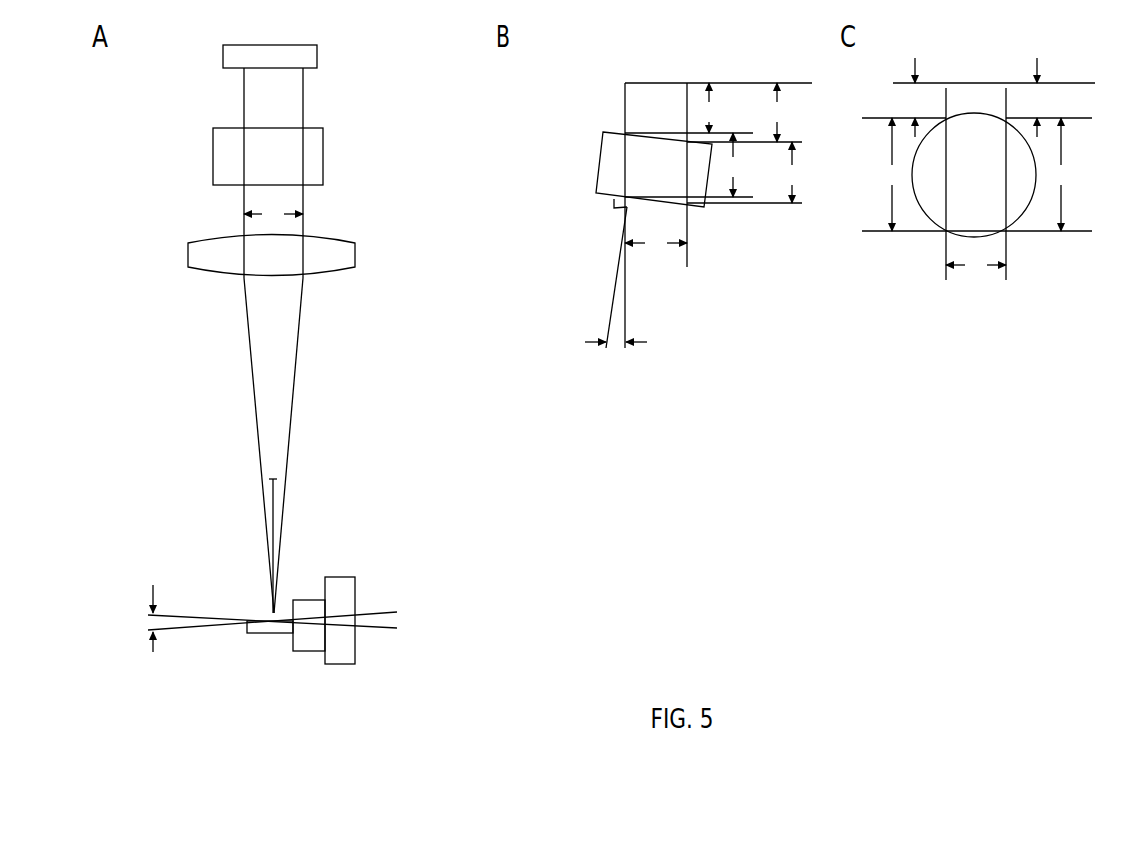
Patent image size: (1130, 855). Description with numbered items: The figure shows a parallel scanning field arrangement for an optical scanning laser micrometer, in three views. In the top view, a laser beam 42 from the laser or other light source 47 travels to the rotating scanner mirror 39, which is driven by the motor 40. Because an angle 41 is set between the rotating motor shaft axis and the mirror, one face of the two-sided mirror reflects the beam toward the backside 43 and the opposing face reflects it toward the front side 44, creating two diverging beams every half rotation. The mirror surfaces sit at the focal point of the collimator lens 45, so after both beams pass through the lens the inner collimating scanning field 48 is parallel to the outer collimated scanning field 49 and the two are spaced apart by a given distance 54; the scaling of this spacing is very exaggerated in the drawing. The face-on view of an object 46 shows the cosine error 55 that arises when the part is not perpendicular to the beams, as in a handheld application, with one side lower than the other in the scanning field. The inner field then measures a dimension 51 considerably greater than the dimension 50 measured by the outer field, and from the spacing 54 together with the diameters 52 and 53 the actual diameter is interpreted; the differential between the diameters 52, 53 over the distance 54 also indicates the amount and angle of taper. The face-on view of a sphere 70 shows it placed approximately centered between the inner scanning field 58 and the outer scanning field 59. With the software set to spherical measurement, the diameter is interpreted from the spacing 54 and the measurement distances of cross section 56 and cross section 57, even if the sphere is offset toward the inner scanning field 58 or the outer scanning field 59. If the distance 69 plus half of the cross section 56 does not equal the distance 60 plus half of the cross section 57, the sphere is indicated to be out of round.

The scanner mirror 39 is at (270, 637).
The motor 40 is at (323, 664).
The angle 41 is at (163, 583).
The laser beam 42 is at (270, 492).
The backside 43 is at (296, 394).
The front side 44 is at (254, 327).
The collimator lens 45 is at (328, 272).
The object 46 is at (326, 155).
The light source 47 is at (322, 58).
The inner collimating scanning field 48 is at (306, 100).
The outer collimated scanning field 49 is at (242, 93).
The parallel scanning beam dimension 50 is at (709, 108).
The parallel scanning beam dimension 51 is at (777, 112).
The diameter 52 is at (733, 165).
The diameter 53 is at (792, 172).
The distance between scanning fields 54 is at (625, 234).
The cosine error 55 is at (604, 276).
The cross section 56 is at (892, 174).
The cross section 57 is at (1061, 174).
The inner scanning field 58 is at (1008, 249).
The outer scanning field 59 is at (944, 249).
The distance 60 is at (1037, 97).
The distance 69 is at (915, 97).
The sphere 70 is at (977, 112).